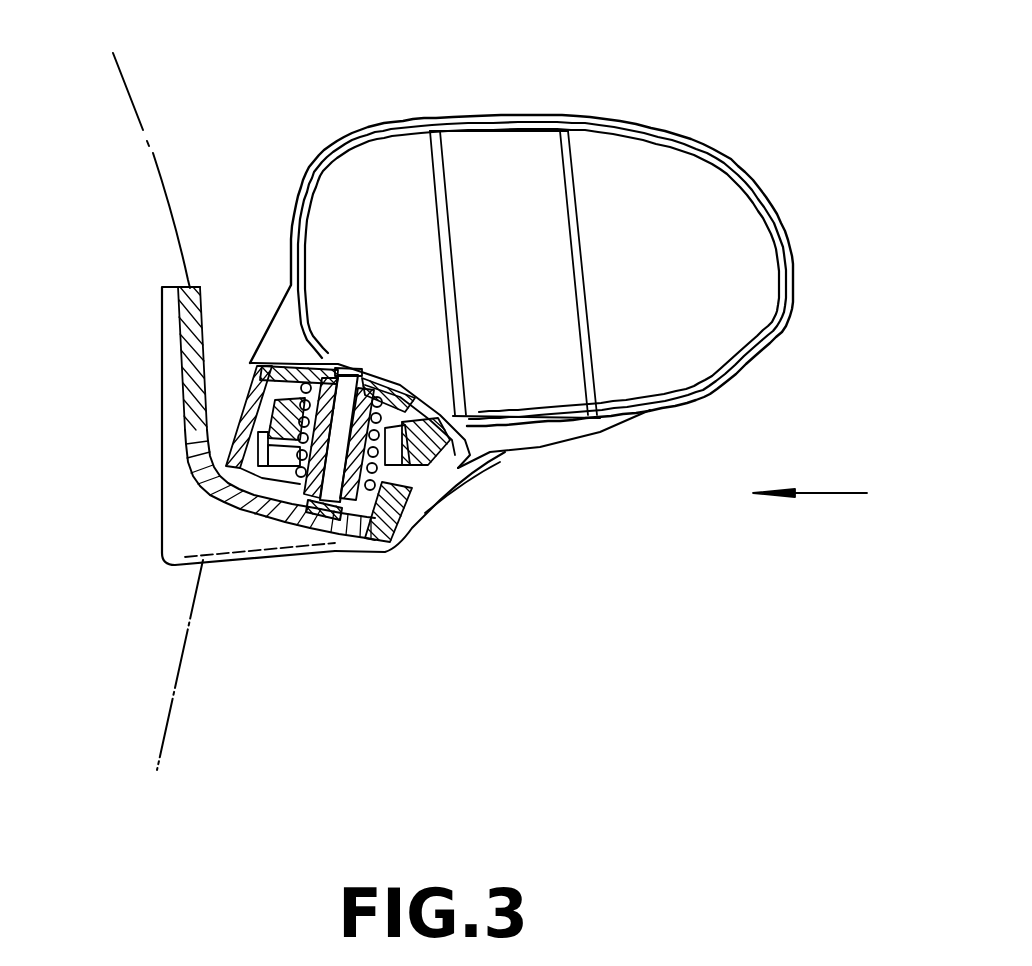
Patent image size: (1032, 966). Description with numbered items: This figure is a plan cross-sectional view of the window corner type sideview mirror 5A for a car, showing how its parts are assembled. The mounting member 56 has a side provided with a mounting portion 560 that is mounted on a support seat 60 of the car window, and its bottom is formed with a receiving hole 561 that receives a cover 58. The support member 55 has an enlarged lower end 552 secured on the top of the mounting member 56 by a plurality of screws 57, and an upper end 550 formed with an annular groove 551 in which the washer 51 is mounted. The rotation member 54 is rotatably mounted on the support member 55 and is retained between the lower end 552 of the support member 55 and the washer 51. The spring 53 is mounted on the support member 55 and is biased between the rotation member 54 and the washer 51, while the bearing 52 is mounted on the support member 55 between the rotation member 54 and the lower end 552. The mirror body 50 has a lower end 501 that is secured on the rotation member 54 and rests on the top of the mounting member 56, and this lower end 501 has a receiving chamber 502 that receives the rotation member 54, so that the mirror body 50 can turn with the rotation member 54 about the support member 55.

The mirror body 50 is at (752, 183).
The washer 51 is at (415, 400).
The bearing 52 is at (407, 523).
The spring 53 is at (312, 362).
The rotation member 54 is at (255, 362).
The support member 55 is at (290, 446).
The mounting member 56 is at (343, 560).
The screws 57 is at (250, 540).
The cover 58 is at (267, 560).
The support seat 60 is at (113, 72).
The lower end 501 is at (413, 527).
The receiving chamber 502 is at (407, 502).
The upper end 550 is at (340, 395).
The annular groove 551 is at (317, 363).
The enlarged lower end 552 is at (380, 553).
The mounting portion 560 is at (173, 475).
The receiving hole 561 is at (274, 545).
The window corner type sideview mirror 5A is at (841, 493).